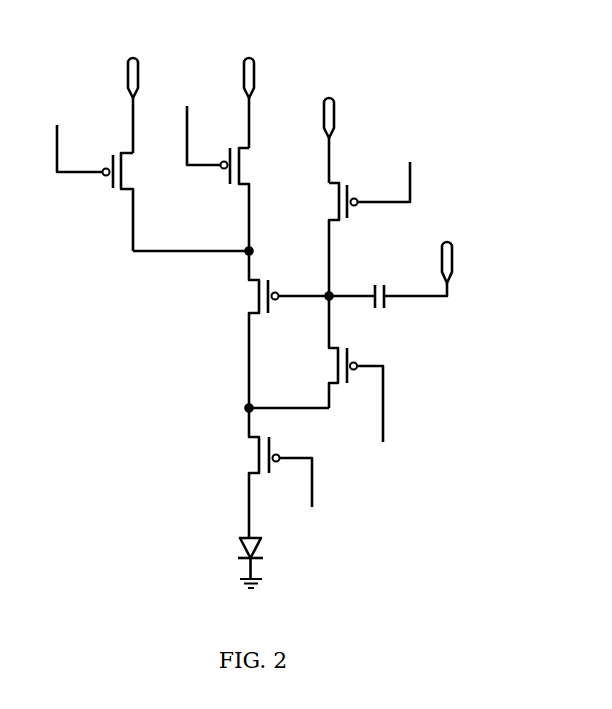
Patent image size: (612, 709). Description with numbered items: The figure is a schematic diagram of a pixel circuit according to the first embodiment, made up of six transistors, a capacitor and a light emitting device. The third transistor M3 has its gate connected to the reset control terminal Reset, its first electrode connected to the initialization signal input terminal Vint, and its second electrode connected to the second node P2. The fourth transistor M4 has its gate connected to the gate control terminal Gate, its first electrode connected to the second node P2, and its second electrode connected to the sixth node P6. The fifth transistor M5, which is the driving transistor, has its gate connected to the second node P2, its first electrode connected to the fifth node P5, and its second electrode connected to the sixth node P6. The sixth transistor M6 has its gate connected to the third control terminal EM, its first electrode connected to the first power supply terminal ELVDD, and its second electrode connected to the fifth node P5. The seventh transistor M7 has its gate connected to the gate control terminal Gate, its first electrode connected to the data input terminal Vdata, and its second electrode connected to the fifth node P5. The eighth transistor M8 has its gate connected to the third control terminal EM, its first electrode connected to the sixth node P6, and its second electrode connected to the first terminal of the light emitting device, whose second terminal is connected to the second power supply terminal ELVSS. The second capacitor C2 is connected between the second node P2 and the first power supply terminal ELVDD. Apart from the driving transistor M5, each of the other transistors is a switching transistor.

The data input terminal Vdata is at (133, 95).
The first power supply terminal ELVDD is at (347, 166).
The third control terminal EM is at (249, 305).
The gate control terminal Gate is at (219, 284).
The initialization signal input terminal Vint is at (327, 129).
The reset control terminal Reset is at (393, 170).
The second power supply terminal ELVSS is at (249, 574).
The seventh transistor M7 is at (127, 202).
The sixth transistor M6 is at (243, 199).
The fifth transistor M5 is at (249, 329).
The third transistor M3 is at (333, 239).
The fourth transistor M4 is at (335, 352).
The eighth transistor M8 is at (258, 473).
The second capacitor C2 is at (379, 287).
The fifth node P5 is at (202, 251).
The second node P2 is at (327, 288).
The sixth node P6 is at (288, 401).